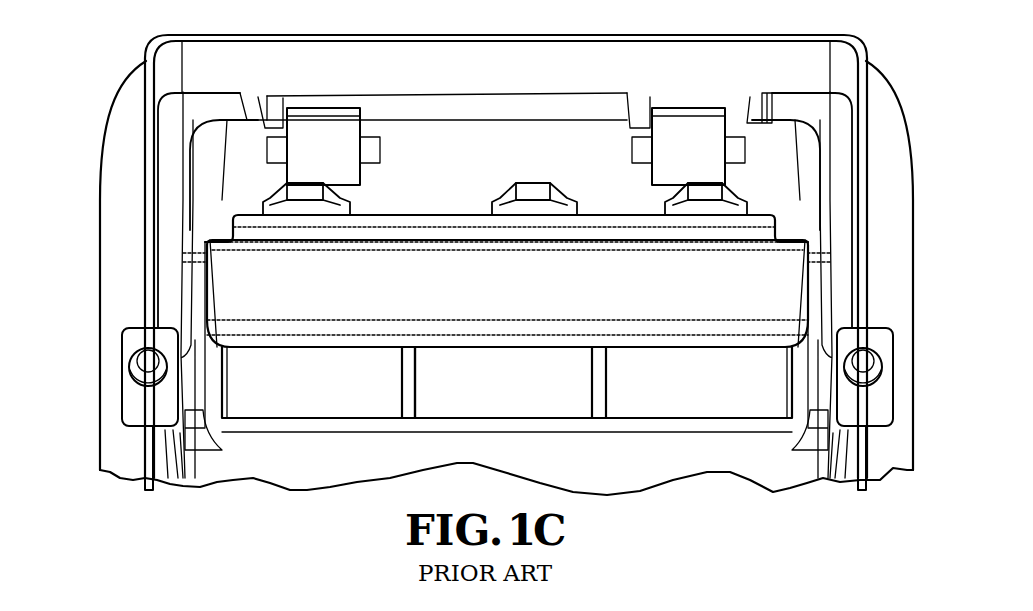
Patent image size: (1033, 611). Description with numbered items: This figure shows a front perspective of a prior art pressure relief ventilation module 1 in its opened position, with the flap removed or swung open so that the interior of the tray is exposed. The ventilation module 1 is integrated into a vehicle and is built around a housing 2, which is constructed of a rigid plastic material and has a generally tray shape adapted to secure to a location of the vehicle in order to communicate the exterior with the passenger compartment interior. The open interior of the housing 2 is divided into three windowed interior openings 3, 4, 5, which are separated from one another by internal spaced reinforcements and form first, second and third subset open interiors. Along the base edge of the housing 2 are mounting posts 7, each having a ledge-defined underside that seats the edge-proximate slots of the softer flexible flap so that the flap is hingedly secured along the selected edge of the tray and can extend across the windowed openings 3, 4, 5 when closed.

The ventilation module 1 is at (84, 141).
The housing 2 is at (893, 177).
The windowed interior opening 3 is at (325, 392).
The windowed interior opening 4 is at (510, 392).
The windowed interior opening 5 is at (696, 392).
The mounting posts 7 is at (518, 207).